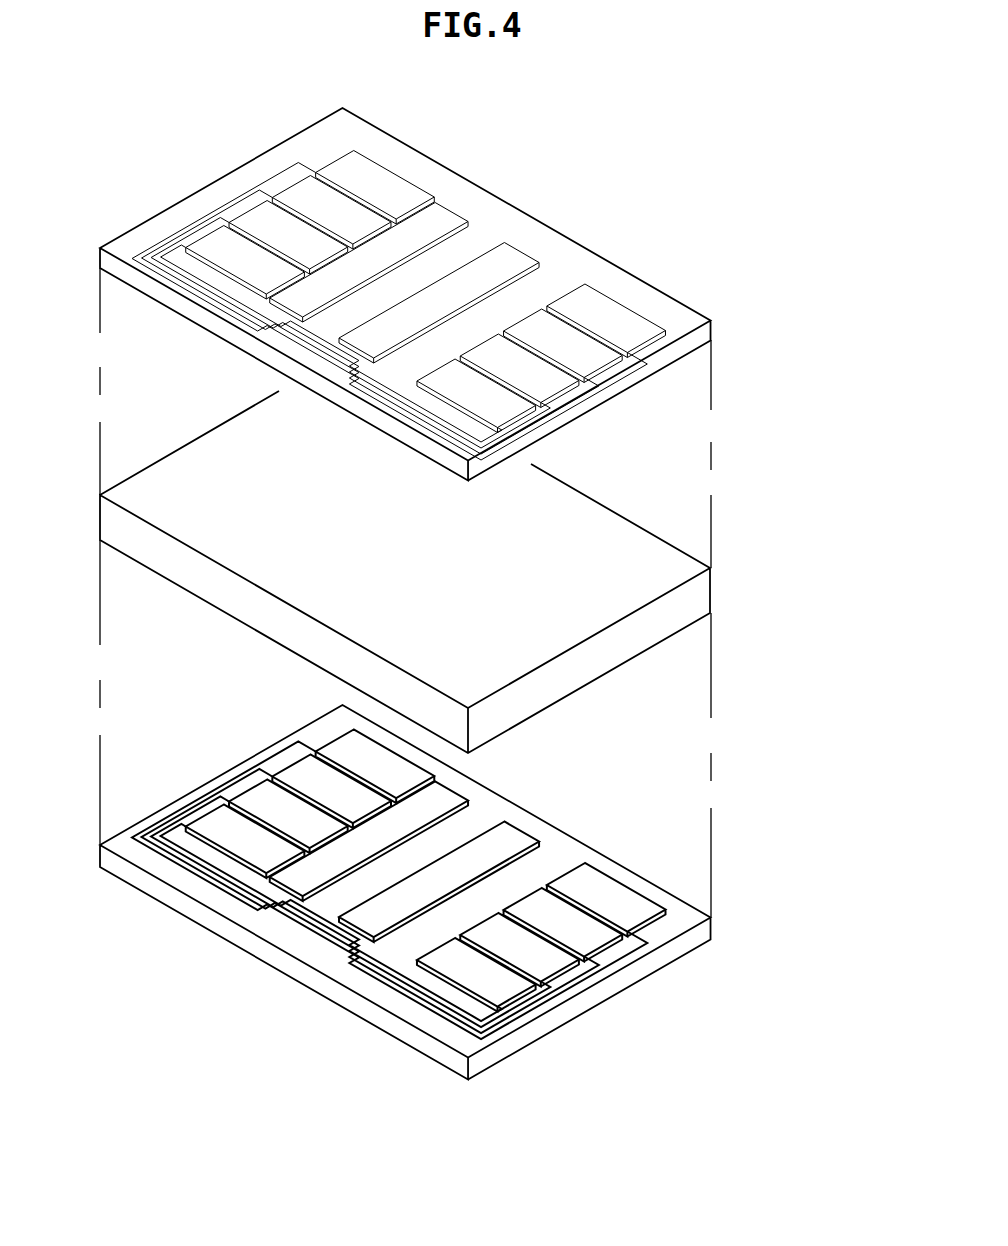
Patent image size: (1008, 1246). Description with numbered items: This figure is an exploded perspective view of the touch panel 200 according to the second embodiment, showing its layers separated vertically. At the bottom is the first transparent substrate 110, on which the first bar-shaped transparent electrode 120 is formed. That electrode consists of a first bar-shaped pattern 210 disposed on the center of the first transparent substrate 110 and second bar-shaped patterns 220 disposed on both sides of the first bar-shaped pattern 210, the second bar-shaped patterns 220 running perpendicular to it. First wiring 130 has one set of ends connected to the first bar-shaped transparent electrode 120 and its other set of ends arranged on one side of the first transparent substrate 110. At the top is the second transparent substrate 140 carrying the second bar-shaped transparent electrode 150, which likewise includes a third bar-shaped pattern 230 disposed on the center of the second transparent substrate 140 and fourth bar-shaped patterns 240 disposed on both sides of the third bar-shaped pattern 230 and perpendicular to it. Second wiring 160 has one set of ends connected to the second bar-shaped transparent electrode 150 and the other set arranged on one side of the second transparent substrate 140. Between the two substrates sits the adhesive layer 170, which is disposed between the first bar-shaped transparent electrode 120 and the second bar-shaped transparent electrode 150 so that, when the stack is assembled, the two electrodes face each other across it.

The touch panel 200 is at (112, 168).
The first transparent substrate 110 is at (702, 930).
The first bar-shaped transparent electrode 120 is at (805, 725).
The first wiring 130 is at (638, 953).
The second transparent substrate 140 is at (685, 356).
The second bar-shaped transparent electrode 150 is at (512, 90).
The second wiring 160 is at (610, 388).
The adhesive layer 170 is at (700, 598).
The first bar-shaped pattern 210 is at (553, 863).
The second bar-shaped patterns 220 is at (388, 763).
The third bar-shaped pattern 230 is at (548, 273).
The fourth bar-shaped patterns 240 is at (378, 178).